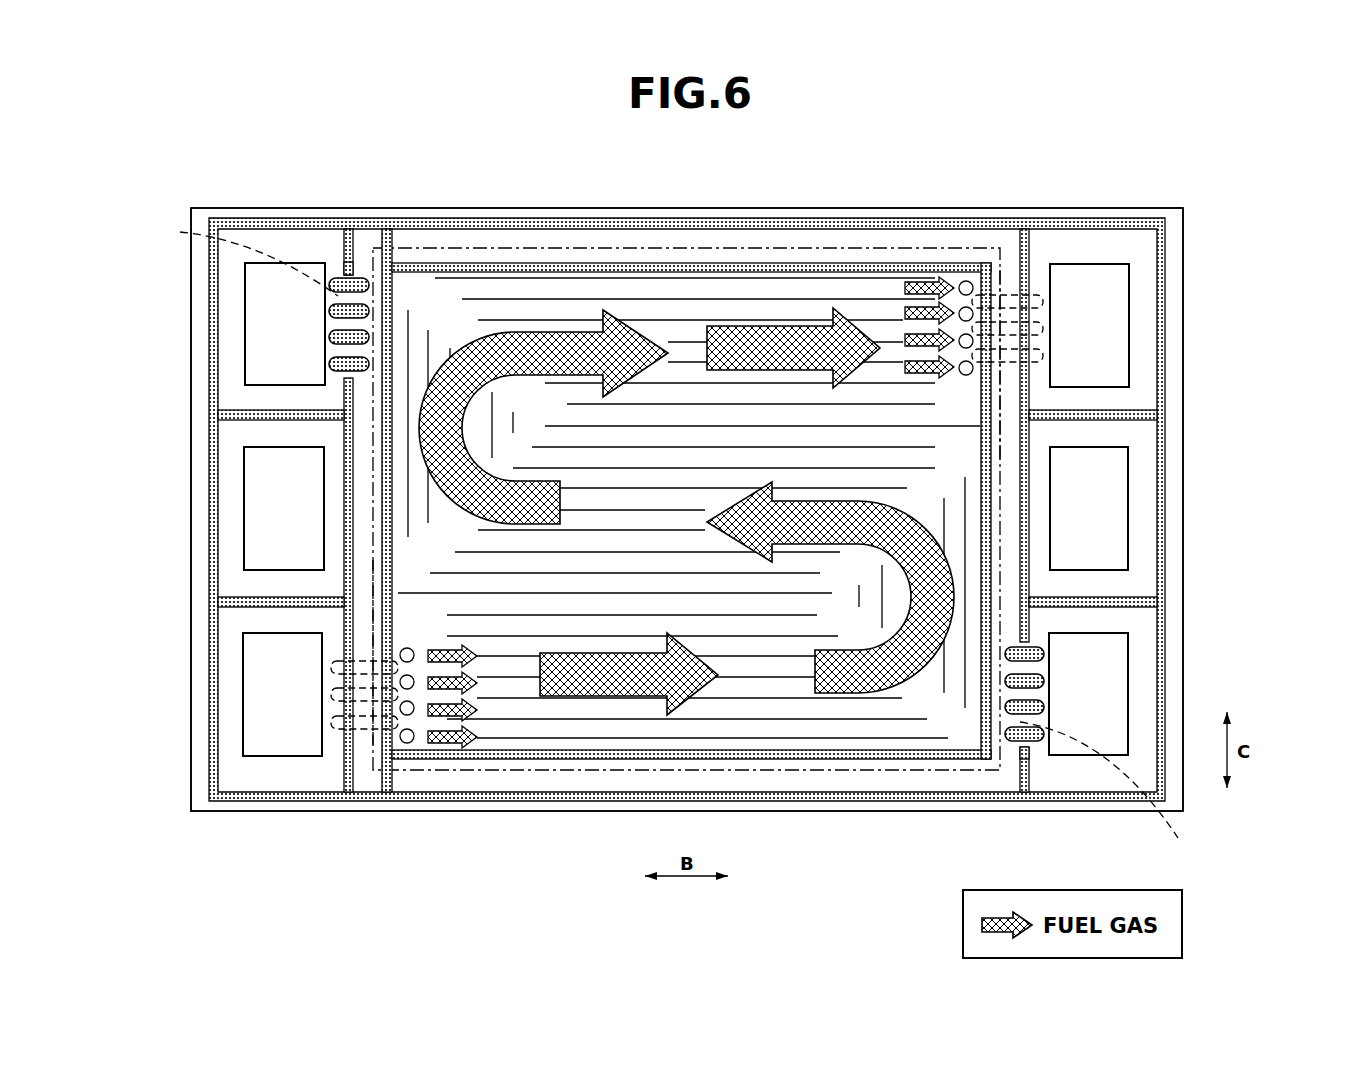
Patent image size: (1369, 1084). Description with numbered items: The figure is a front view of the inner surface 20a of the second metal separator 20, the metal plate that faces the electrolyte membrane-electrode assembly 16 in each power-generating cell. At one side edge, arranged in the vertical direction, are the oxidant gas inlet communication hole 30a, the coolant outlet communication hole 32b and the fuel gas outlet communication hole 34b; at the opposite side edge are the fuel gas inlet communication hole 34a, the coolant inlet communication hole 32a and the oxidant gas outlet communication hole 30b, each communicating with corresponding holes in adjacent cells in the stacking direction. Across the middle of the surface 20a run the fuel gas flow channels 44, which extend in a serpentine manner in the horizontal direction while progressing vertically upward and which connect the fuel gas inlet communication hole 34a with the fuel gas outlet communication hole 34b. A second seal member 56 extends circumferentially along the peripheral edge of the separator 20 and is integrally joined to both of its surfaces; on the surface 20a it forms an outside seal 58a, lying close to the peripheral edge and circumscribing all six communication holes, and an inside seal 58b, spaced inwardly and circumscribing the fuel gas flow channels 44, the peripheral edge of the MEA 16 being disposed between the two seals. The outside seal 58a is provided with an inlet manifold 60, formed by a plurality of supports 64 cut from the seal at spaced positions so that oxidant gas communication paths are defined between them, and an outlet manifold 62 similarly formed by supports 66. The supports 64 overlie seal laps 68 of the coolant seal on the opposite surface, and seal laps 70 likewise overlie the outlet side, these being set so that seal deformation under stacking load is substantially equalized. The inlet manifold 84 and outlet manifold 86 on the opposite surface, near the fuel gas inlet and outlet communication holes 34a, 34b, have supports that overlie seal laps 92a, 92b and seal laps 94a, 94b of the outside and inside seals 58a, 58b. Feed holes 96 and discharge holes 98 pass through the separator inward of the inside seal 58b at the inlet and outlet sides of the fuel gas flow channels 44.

The electrolyte membrane-electrode assembly 16 is at (567, 248).
The second metal separator 20 is at (1068, 157).
The inner surface 20a is at (640, 240).
The oxidant gas inlet communication hole 30a is at (1095, 692).
The oxidant gas outlet communication hole 30b is at (280, 325).
The coolant inlet communication hole 32a is at (280, 513).
The coolant outlet communication hole 32b is at (1092, 511).
The fuel gas inlet communication hole 34a is at (280, 692).
The fuel gas outlet communication hole 34b is at (1092, 311).
The fuel gas flow channels 44 is at (615, 710).
The second seal member 56 is at (1091, 206).
The outside seal 58a is at (757, 226).
The inside seal 58b is at (872, 264).
The inlet manifold 60 is at (1036, 753).
The outlet manifold 62 is at (337, 262).
The supports 64 is at (1043, 735).
The supports 66 is at (330, 286).
The seal laps 68 is at (1113, 790).
The seal laps 70 is at (180, 232).
The inlet manifold 84 is at (337, 750).
The outlet manifold 86 is at (1038, 273).
The seal laps 92a is at (345, 633).
The seal laps 92b is at (380, 607).
The seal laps 94a is at (990, 396).
The seal laps 94b is at (1000, 388).
The feed holes 96 is at (409, 745).
The discharge holes 98 is at (967, 282).